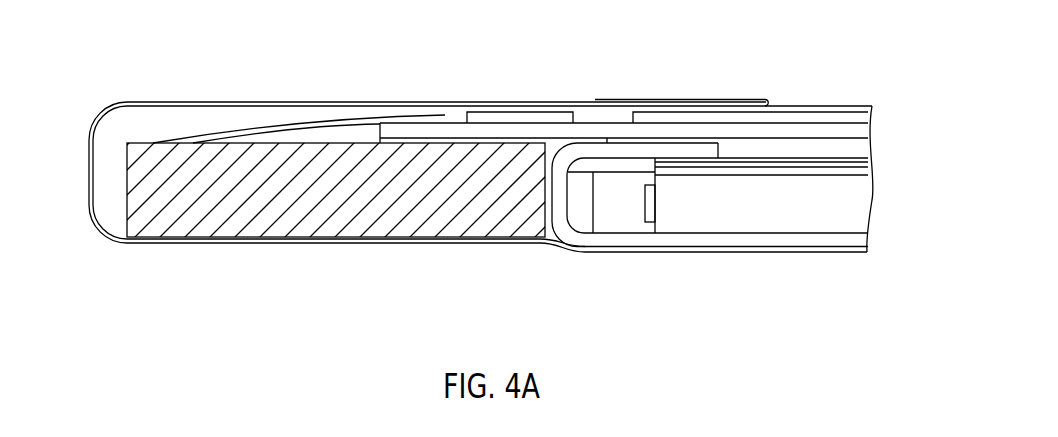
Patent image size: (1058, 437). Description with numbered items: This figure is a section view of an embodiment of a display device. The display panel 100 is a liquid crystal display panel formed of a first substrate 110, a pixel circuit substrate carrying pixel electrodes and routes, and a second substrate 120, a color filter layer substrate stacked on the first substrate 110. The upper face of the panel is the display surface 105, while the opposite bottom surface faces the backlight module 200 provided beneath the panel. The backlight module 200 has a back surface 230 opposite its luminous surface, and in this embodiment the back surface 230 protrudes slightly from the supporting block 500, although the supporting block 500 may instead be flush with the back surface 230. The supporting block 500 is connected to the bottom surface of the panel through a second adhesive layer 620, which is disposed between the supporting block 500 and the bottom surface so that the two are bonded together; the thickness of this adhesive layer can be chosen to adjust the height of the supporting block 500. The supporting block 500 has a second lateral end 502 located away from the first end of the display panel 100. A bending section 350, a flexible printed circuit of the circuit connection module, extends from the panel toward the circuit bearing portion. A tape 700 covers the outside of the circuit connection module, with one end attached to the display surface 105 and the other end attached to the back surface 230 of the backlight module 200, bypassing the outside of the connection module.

The display panel 100 is at (953, 63).
The display surface 105 is at (815, 104).
The first substrate 110 is at (860, 131).
The second substrate 120 is at (897, 89).
The backlight module 200 is at (873, 141).
The back surface 230 is at (753, 250).
The bending section 350 is at (330, 120).
The supporting block 500 is at (243, 185).
The second lateral end 502 is at (125, 186).
The second adhesive layer 620 is at (450, 142).
The tape 700 is at (265, 102).